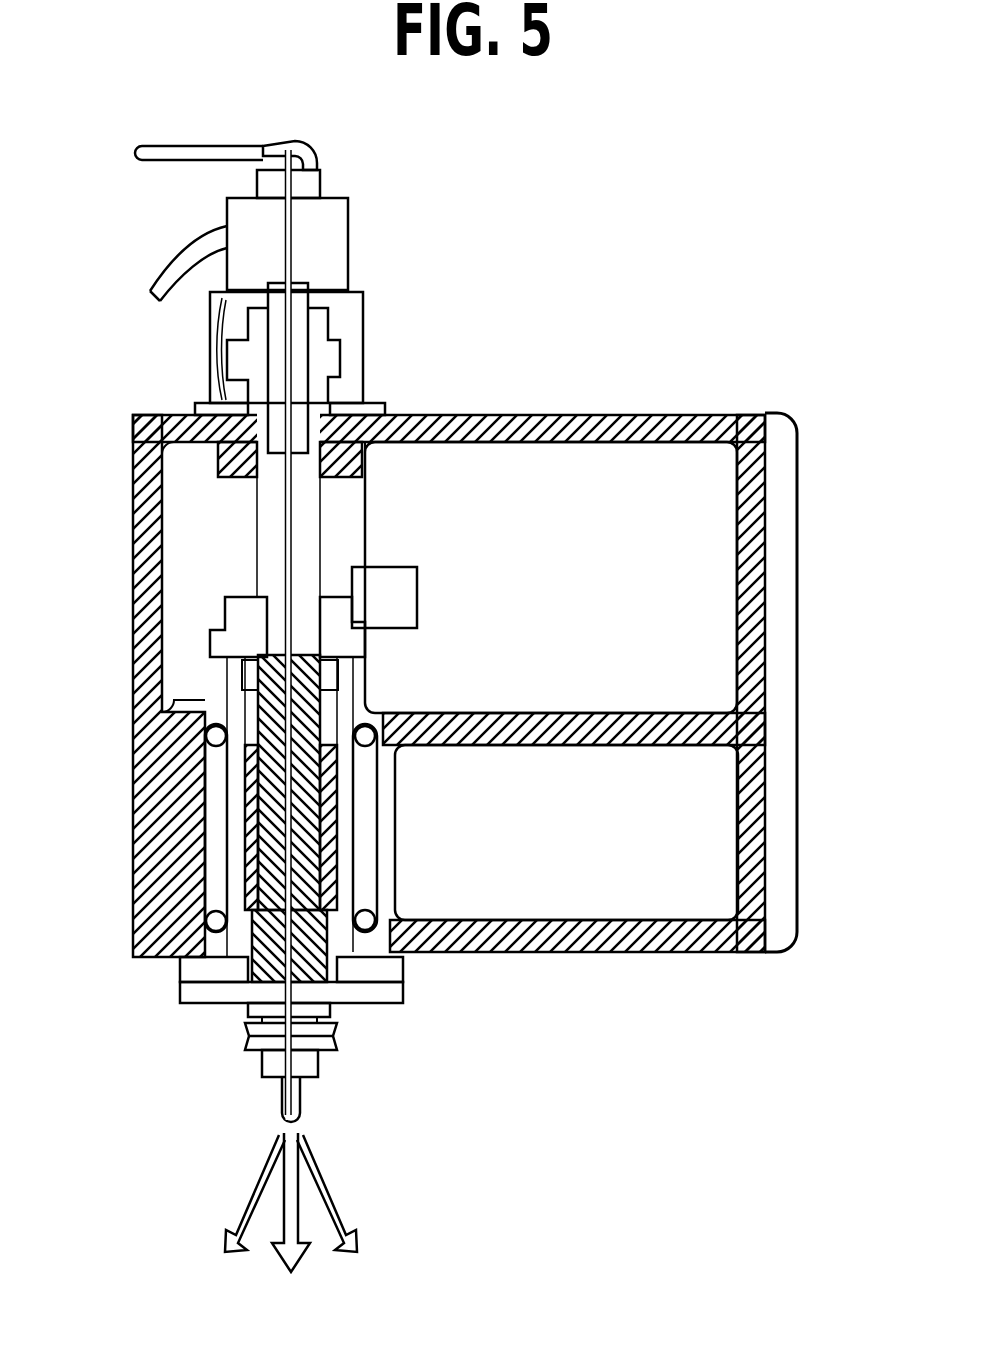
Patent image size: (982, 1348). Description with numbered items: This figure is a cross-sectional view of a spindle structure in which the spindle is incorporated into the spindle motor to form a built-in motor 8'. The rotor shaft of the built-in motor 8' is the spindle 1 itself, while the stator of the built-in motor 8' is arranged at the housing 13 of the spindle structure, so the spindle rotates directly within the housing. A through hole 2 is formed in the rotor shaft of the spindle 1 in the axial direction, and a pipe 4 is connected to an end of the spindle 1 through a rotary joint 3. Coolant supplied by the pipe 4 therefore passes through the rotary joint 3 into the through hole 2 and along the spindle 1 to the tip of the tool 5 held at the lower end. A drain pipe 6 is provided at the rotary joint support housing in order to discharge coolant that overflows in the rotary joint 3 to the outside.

The spindle 1 is at (268, 720).
The through hole 2 is at (265, 862).
The rotary joint 3 is at (367, 230).
The pipe 4 is at (185, 145).
The tool 5 is at (287, 1098).
The drain pipe 6 is at (170, 256).
The built-in motor 8' is at (362, 875).
The housing 13 is at (753, 780).